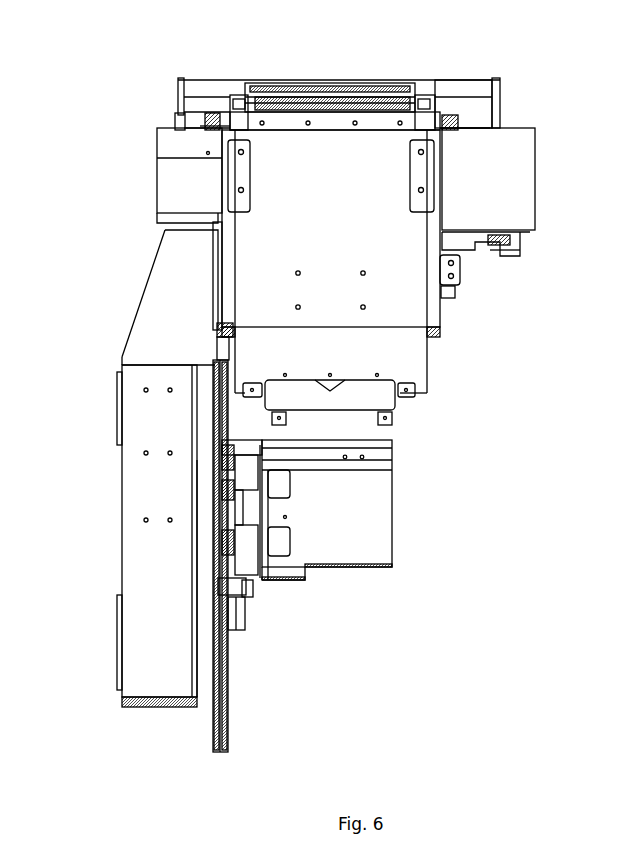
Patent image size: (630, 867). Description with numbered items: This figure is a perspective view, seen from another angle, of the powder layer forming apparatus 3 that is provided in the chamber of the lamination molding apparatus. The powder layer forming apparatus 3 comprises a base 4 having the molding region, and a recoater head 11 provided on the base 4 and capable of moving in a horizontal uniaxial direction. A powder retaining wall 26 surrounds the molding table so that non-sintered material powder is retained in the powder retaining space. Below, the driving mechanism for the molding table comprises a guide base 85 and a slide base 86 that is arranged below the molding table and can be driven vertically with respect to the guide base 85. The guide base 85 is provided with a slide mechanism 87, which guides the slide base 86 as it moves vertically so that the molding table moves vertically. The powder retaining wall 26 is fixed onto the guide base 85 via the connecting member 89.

The powder layer forming apparatus 3 is at (536, 84).
The base 4 is at (400, 250).
The recoater head 11 is at (428, 67).
The powder retaining wall 26 is at (228, 262).
The guide base 85 is at (130, 545).
The slide base 86 is at (385, 530).
The slide mechanism 87 is at (226, 678).
The connecting member 89 is at (218, 288).